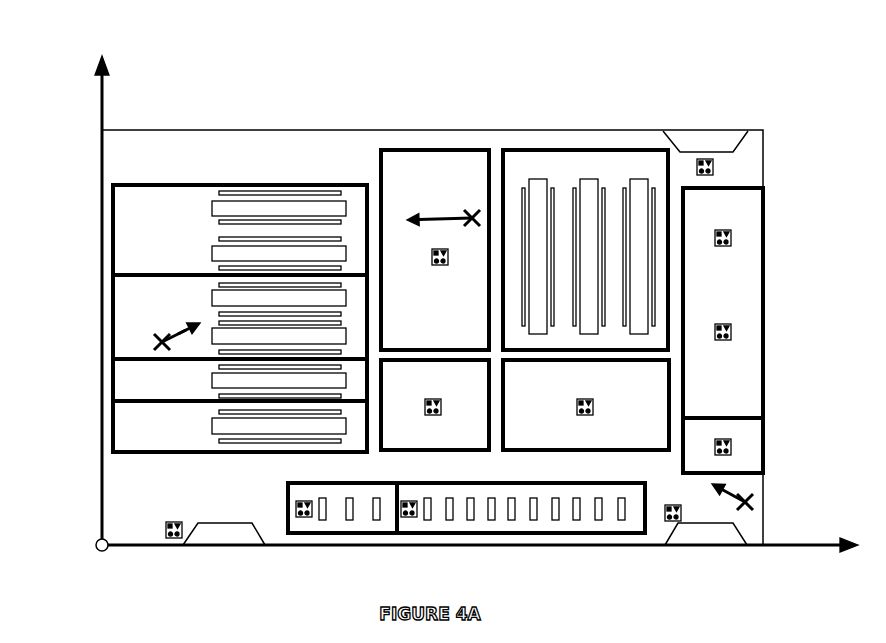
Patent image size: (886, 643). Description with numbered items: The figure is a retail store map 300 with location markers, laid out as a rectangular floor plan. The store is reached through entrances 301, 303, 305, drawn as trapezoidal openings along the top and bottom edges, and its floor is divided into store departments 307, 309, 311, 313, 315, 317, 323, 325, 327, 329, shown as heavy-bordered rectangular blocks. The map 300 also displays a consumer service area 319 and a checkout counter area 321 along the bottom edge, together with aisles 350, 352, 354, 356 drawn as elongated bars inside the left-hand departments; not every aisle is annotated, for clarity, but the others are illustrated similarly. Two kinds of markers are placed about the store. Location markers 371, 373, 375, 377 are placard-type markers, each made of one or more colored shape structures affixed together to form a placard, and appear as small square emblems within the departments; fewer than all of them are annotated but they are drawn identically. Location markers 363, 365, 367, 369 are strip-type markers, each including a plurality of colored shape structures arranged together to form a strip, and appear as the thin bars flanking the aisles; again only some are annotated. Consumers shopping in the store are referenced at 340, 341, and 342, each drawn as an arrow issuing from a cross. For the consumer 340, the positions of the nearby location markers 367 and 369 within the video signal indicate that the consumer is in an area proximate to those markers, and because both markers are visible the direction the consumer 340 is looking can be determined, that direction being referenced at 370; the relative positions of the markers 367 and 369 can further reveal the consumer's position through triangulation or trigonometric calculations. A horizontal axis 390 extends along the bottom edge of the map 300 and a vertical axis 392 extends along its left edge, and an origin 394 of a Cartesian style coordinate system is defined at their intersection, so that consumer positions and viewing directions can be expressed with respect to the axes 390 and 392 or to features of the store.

The retail store map 300 is at (392, 78).
The entrance 301 is at (704, 150).
The entrance 303 is at (225, 523).
The entrance 305 is at (685, 523).
The store department 307 is at (238, 184).
The store department 309 is at (113, 318).
The store department 311 is at (113, 380).
The store department 313 is at (113, 428).
The store department 315 is at (437, 150).
The store department 317 is at (400, 450).
The consumer service area 319 is at (343, 533).
The checkout counter area 321 is at (468, 533).
The store department 323 is at (587, 150).
The store department 325 is at (560, 450).
The store department 327 is at (722, 188).
The store department 329 is at (740, 473).
The consumer 340 is at (154, 343).
The consumer 341 is at (472, 197).
The consumer 342 is at (750, 508).
The aisle 350 is at (212, 202).
The aisle 352 is at (212, 252).
The aisle 354 is at (346, 295).
The aisle 356 is at (346, 330).
The strip-type location marker 363 is at (219, 222).
The strip-type location marker 365 is at (341, 239).
The strip-type location marker 367 is at (341, 312).
The strip-type location marker 369 is at (219, 321).
The direction 370 is at (183, 333).
The placard-type location marker 371 is at (435, 265).
The placard-type location marker 373 is at (585, 418).
The placard-type location marker 375 is at (433, 418).
The placard-type location marker 377 is at (713, 440).
The horizontal axis 390 is at (832, 546).
The vertical axis 392 is at (100, 102).
The origin 394 is at (97, 540).